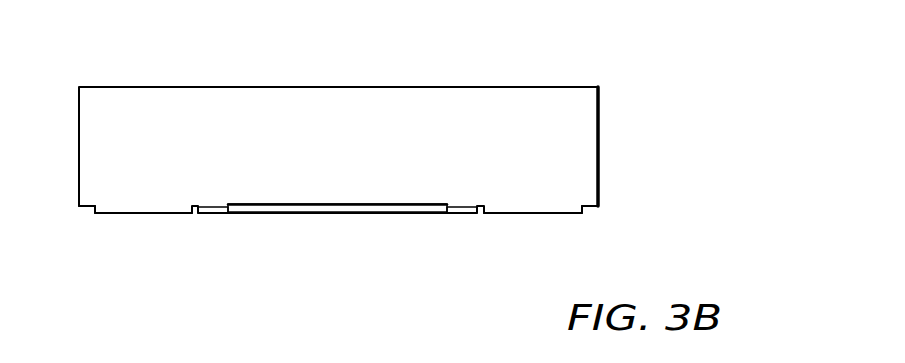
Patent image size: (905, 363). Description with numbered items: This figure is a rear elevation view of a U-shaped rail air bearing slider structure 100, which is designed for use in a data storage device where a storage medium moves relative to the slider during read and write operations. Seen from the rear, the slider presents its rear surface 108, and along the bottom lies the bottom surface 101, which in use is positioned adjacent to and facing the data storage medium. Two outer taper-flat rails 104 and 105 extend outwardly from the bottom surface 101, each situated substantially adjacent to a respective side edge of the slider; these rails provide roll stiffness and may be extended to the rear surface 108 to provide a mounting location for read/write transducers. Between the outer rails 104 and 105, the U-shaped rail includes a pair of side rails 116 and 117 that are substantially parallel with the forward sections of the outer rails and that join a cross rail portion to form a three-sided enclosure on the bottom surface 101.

The U-shaped rail air bearing slider structure 100 is at (620, 82).
The rear surface 108 is at (580, 148).
The outer taper-flat rail 104 is at (143, 214).
The outer taper-flat rail 105 is at (547, 214).
The bottom surface 101 is at (297, 207).
The side rail 116 is at (212, 214).
The side rail 117 is at (462, 214).